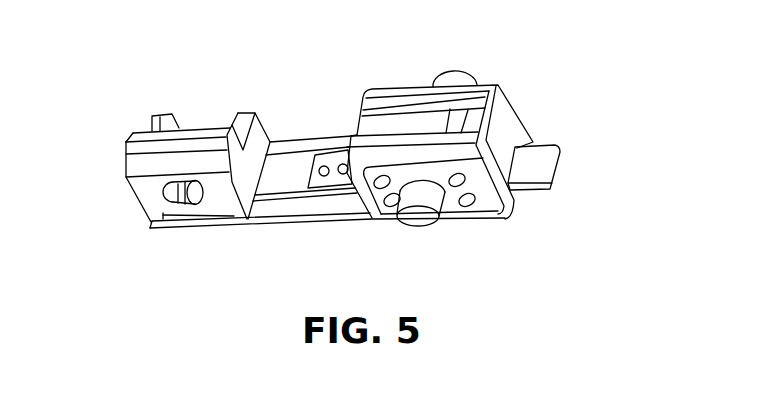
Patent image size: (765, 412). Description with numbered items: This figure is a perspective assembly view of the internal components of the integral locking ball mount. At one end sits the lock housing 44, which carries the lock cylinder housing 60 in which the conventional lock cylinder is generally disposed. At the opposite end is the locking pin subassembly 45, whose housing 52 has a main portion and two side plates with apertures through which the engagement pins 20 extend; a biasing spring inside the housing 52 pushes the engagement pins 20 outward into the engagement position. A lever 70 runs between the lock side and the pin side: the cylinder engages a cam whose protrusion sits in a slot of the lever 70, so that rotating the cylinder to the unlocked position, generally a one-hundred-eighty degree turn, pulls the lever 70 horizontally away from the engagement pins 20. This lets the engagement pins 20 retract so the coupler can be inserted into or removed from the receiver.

The engagement pin 20 is at (425, 221).
The lock housing 44 is at (138, 163).
The locking pin subassembly 45 is at (511, 104).
The housing 52 is at (375, 219).
The lock cylinder housing 60 is at (178, 204).
The lever 70 is at (543, 168).